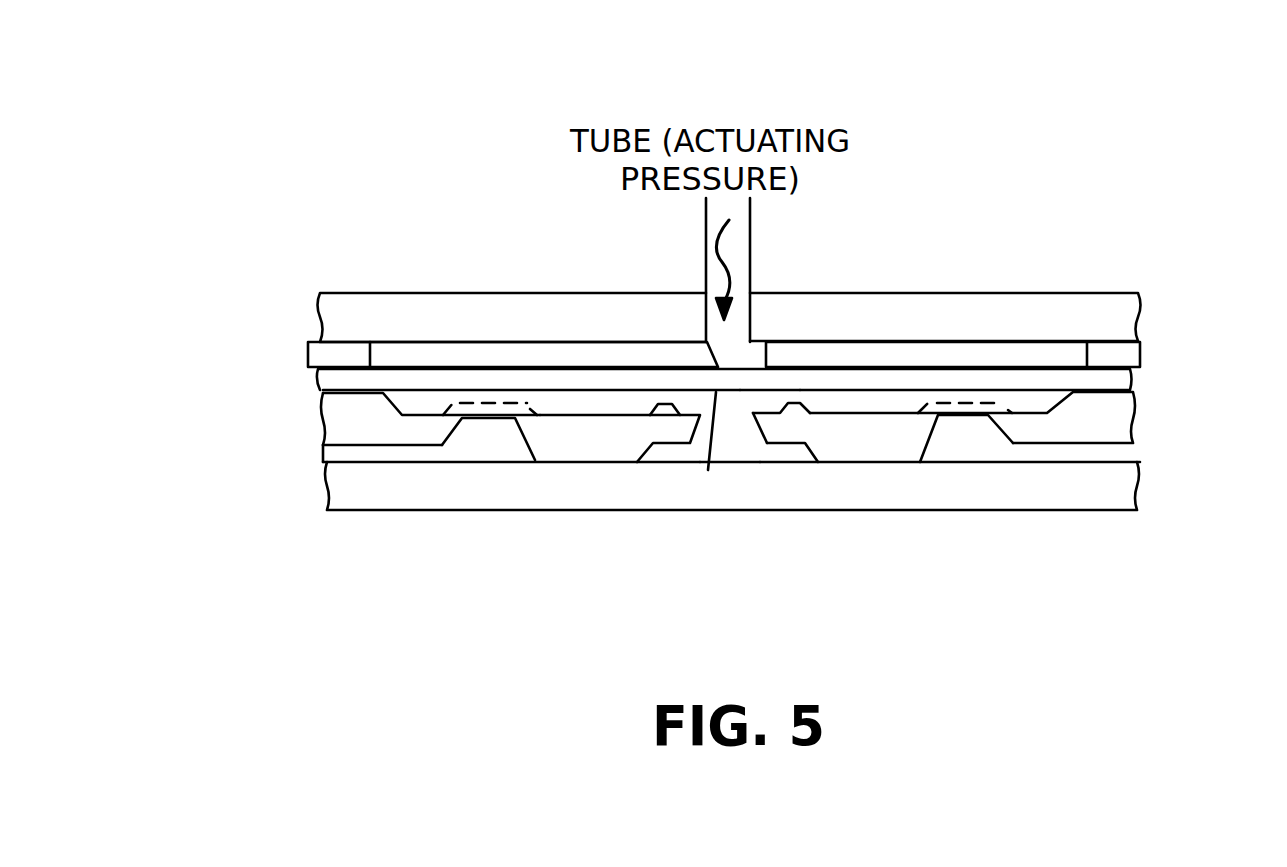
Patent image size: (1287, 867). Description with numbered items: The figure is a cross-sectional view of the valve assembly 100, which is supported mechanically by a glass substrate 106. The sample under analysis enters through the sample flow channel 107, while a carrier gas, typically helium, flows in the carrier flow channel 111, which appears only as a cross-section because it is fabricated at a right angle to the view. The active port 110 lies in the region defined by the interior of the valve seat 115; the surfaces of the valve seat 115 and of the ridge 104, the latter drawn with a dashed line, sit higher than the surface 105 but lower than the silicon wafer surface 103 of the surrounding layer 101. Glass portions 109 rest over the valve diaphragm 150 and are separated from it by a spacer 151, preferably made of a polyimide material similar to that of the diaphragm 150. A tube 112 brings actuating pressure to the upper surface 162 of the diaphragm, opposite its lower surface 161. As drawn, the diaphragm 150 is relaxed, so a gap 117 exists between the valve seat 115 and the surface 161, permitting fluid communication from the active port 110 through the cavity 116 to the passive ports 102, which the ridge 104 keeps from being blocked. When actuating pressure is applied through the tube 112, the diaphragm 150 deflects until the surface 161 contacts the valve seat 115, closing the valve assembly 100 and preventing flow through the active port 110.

The valve assembly 100 is at (236, 63).
The channel layer 101 is at (320, 417).
The passive port 102 is at (470, 440).
The silicon wafer surface 103 is at (1137, 389).
The ridge 104 is at (958, 430).
The surface 105 is at (559, 390).
The glass substrate 106 is at (1142, 485).
The sample flow channel 107 is at (318, 455).
The glass portions 109 is at (392, 293).
The active port 110 is at (747, 430).
The carrier flow channel 111 is at (734, 474).
The tube 112 is at (753, 233).
The valve seat 115 is at (793, 402).
The cavity 116 is at (591, 382).
The gap 117 is at (770, 388).
The valve diaphragm 150 is at (317, 380).
The spacer 151 is at (308, 342).
The surface of valve diaphragm 161 is at (708, 470).
The surface of valve diaphragm 162 is at (767, 342).